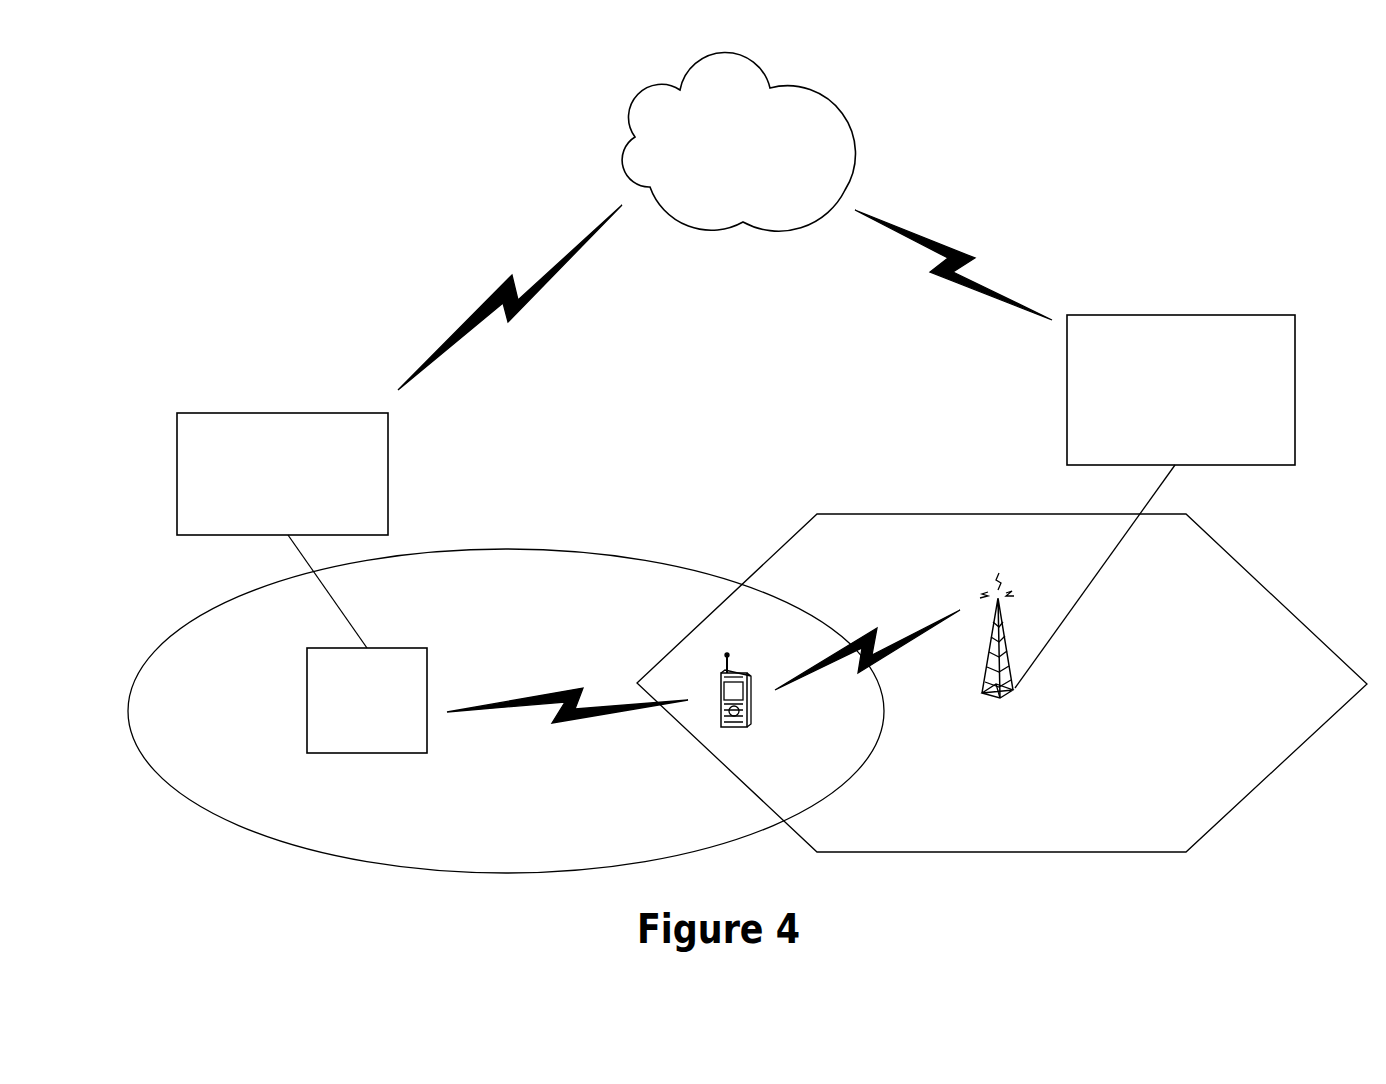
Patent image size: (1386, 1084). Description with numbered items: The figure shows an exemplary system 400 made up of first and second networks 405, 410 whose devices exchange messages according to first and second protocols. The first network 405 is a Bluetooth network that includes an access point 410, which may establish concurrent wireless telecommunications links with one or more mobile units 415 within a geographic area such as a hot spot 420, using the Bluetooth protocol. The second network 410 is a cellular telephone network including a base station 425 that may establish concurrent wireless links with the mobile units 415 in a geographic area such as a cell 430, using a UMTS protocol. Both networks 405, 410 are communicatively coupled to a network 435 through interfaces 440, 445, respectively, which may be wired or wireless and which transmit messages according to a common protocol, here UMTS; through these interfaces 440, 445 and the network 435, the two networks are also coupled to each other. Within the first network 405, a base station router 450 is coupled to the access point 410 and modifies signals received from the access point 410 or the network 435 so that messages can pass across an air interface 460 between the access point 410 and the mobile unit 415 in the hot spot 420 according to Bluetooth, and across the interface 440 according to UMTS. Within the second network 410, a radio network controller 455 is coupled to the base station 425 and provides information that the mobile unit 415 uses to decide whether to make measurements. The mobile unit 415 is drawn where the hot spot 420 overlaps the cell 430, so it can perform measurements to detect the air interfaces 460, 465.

The system 400 is at (1132, 119).
The first network 405 is at (289, 330).
The second network / access point 410 is at (1297, 205).
The mobile unit 415 is at (737, 728).
The hot spot 420 is at (142, 665).
The base station 425 is at (1003, 698).
The cell 430 is at (1312, 632).
The network 435 is at (738, 141).
The interface 440 is at (508, 275).
The interface 445 is at (948, 243).
The base station router 450 is at (282, 474).
The radio network controller 455 is at (1181, 390).
The air interface 460 is at (592, 720).
The air interface 465 is at (895, 655).